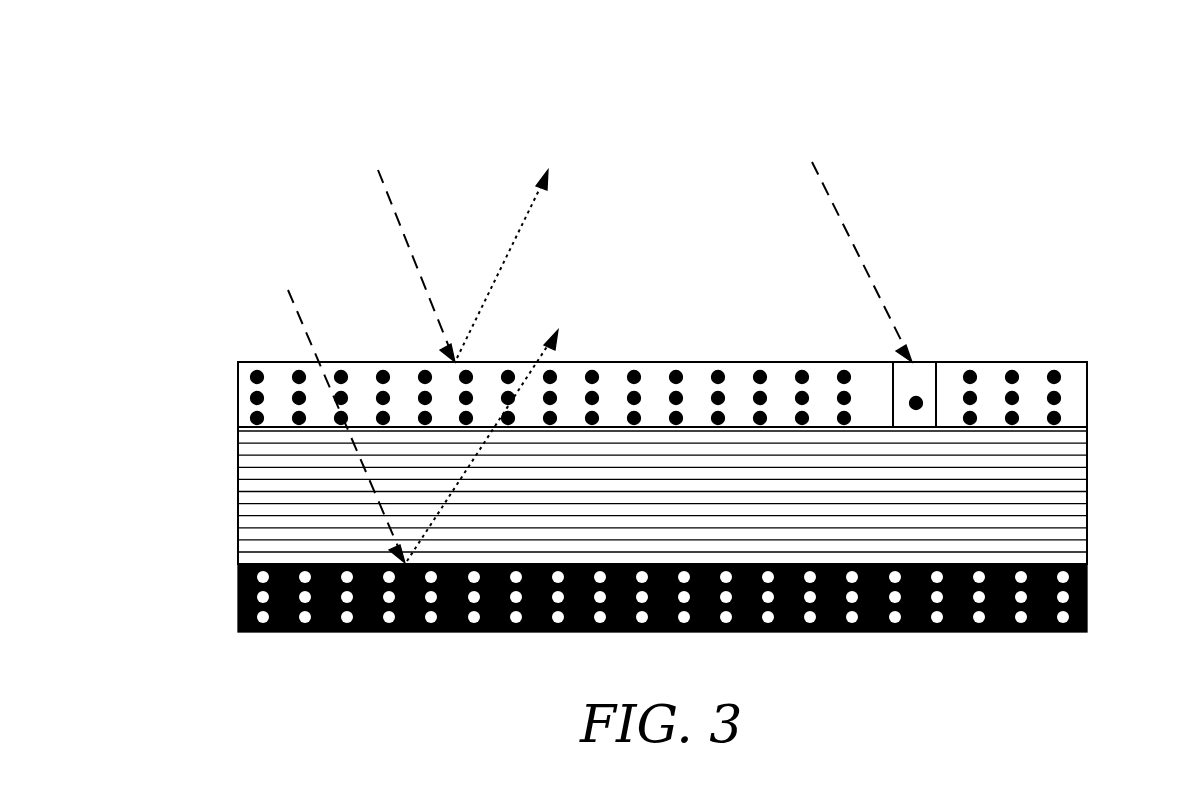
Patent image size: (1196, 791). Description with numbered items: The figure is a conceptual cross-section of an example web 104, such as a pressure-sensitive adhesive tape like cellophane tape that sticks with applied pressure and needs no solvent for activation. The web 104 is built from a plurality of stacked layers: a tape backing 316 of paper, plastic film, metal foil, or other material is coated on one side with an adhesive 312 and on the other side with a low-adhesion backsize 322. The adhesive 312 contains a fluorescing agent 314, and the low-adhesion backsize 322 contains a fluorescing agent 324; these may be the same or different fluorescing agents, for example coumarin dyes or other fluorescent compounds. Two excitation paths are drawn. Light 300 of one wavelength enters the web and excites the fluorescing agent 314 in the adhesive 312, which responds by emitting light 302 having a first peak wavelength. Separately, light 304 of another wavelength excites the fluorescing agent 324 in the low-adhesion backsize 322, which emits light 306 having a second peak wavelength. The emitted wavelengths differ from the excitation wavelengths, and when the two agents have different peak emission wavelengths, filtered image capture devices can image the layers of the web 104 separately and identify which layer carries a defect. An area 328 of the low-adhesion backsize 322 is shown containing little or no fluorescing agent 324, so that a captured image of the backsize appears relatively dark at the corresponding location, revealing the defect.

The web 104 is at (1087, 102).
The light 300 is at (288, 290).
The light 302 is at (558, 330).
The light 304 is at (378, 170).
The light 306 is at (548, 172).
The adhesive 312 is at (238, 598).
The fluorescing agent 314 is at (262, 632).
The tape backing 316 is at (252, 492).
The low-adhesion backsize 322 is at (238, 398).
The fluorescing agent 324 is at (256, 374).
The area 328 is at (930, 362).